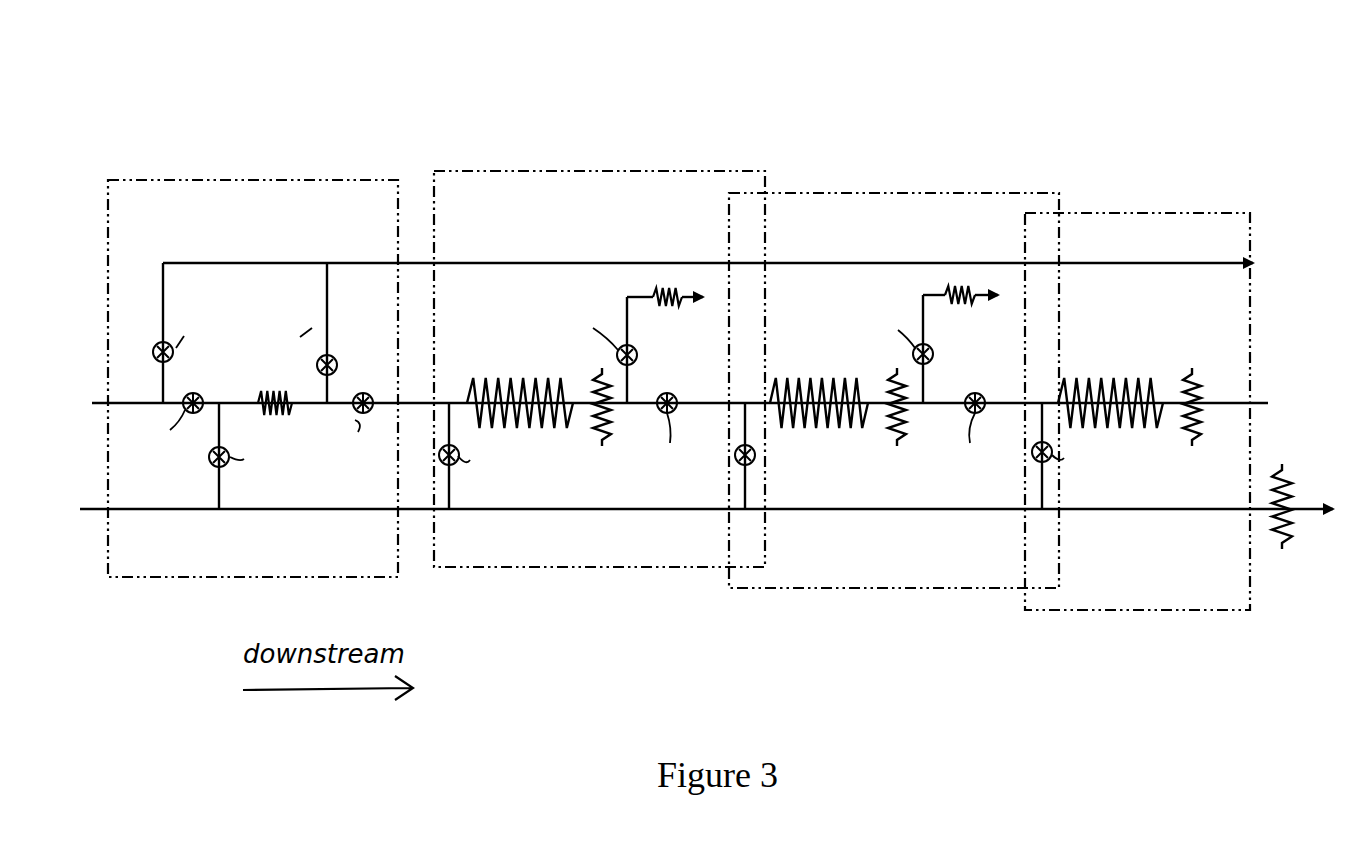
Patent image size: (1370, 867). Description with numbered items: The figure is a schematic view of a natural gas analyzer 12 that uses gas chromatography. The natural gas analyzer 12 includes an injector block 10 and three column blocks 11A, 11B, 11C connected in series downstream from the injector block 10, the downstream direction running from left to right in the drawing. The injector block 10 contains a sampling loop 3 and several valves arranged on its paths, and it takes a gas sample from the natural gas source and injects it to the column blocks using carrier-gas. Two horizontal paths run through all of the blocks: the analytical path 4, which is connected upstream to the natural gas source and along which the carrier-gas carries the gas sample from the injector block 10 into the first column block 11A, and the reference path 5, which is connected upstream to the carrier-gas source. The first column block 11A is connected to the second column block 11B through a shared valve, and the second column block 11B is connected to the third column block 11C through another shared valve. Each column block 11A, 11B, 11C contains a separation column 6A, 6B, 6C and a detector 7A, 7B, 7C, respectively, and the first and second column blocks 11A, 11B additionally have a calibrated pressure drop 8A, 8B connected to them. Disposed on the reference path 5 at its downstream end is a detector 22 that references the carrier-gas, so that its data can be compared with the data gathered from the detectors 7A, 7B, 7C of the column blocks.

The natural gas analyzer 12 is at (750, 54).
The injector block 10 is at (275, 171).
The first column block 11A is at (621, 156).
The second column block 11B is at (913, 179).
The third column block 11C is at (1178, 202).
The analytical path 4 is at (105, 385).
The reference path 5 is at (591, 527).
The sampling loop 3 is at (275, 382).
The separation column 6A is at (520, 378).
The separation column 6B is at (819, 378).
The separation column 6C is at (1110, 378).
The detector 7A is at (615, 427).
The detector 7B is at (907, 427).
The detector 7C is at (1204, 427).
The calibrated pressure drop 8A is at (665, 272).
The calibrated pressure drop 8B is at (959, 272).
The detector 22 is at (1267, 570).